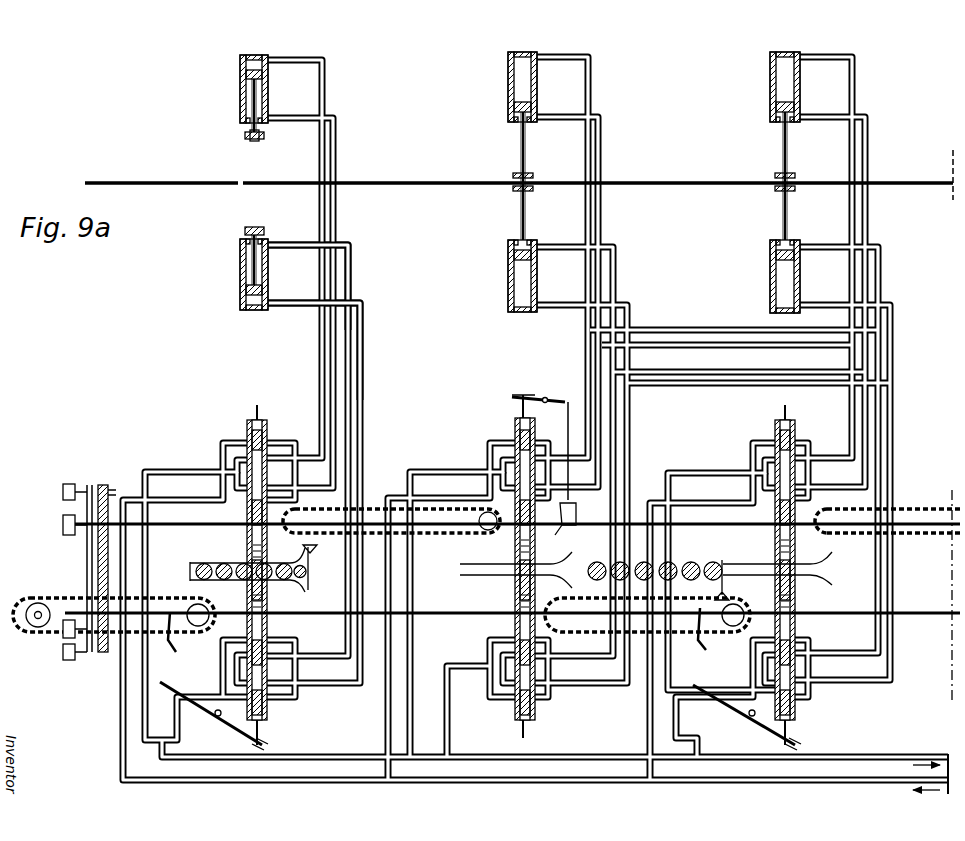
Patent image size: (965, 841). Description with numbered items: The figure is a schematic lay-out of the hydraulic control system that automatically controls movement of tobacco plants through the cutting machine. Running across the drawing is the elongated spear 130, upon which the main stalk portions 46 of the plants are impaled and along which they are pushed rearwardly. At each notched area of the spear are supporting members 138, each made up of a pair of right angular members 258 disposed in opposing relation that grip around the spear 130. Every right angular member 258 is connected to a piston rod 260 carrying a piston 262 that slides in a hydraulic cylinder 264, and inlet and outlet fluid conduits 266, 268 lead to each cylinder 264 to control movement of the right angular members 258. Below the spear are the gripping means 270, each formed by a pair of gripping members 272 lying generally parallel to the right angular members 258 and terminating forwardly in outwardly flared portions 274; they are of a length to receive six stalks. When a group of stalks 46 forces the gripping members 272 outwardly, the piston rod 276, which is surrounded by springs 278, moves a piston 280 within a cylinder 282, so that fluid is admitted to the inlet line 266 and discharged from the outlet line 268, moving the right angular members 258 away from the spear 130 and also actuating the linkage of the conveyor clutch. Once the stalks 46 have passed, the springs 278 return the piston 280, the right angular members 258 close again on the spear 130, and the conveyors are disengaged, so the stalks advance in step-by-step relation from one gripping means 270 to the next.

The main stalk portion 46 is at (193, 572).
The elongated spear 130 is at (432, 181).
The supporting members 138 is at (238, 134).
The right angular members 258 is at (262, 141).
The piston rod 260 is at (255, 260).
The piston 262 is at (250, 297).
The hydraulic cylinder 264 is at (240, 278).
The inlet fluid conduit 266 is at (307, 247).
The outlet fluid conduit 268 is at (295, 307).
The gripping means 270 is at (183, 555).
The gripping members 272 is at (473, 577).
The outwardly flared portions 274 is at (307, 590).
The piston rod 276 is at (260, 600).
The springs 278 is at (212, 555).
The piston 280 is at (265, 632).
The cylinder 282 is at (263, 670).